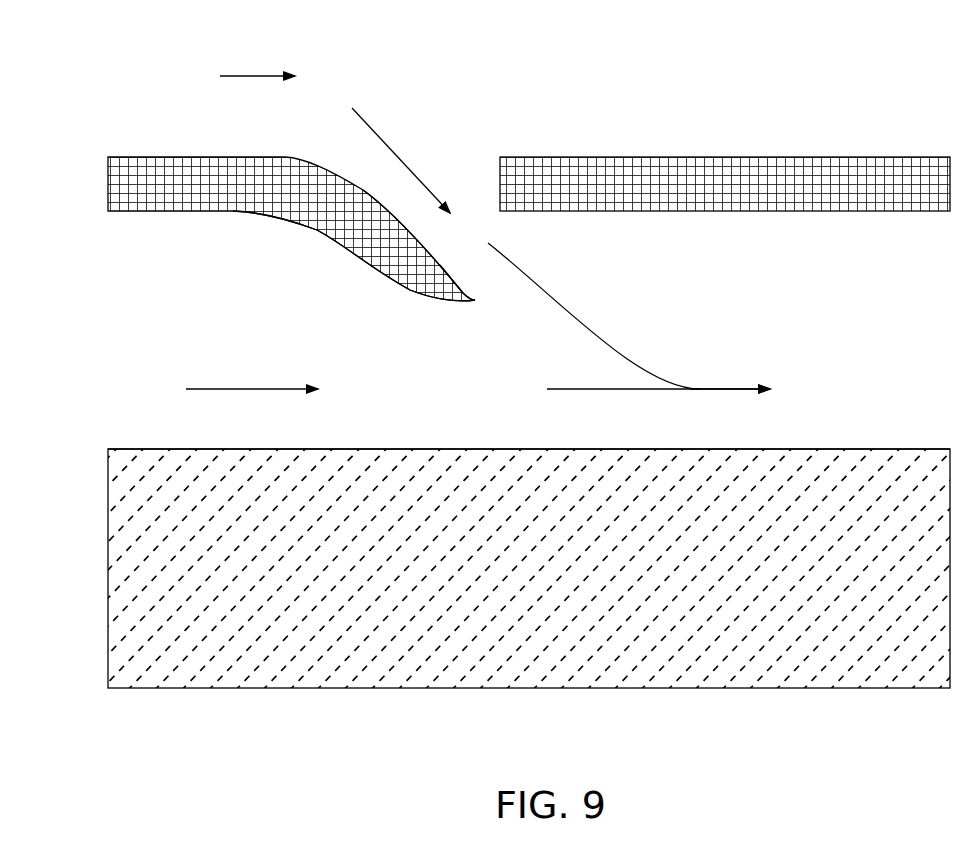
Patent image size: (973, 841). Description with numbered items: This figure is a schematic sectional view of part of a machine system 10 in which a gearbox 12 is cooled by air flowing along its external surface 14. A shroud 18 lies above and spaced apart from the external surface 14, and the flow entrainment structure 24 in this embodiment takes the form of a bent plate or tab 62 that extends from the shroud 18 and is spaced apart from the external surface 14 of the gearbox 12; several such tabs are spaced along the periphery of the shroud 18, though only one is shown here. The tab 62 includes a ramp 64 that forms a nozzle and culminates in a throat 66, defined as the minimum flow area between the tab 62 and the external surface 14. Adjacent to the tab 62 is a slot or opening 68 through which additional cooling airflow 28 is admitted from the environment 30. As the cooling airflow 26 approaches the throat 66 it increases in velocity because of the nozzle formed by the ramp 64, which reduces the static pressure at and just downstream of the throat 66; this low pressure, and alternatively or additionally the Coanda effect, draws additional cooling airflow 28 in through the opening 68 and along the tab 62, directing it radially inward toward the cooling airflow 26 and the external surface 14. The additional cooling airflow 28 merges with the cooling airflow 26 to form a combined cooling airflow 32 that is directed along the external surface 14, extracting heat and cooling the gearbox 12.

The machine system 10 is at (848, 88).
The gearbox 12 is at (544, 574).
The external surface 14 is at (422, 449).
The shroud 18 is at (170, 157).
The flow entrainment structure 24 is at (420, 238).
The cooling airflow 26 is at (230, 389).
The additional cooling airflow 28 is at (236, 76).
The environment 30 is at (88, 81).
The combined cooling airflow 32 is at (719, 388).
The tab 62 is at (392, 254).
The ramp 64 is at (313, 228).
The throat 66 is at (386, 356).
The opening 68 is at (473, 101).